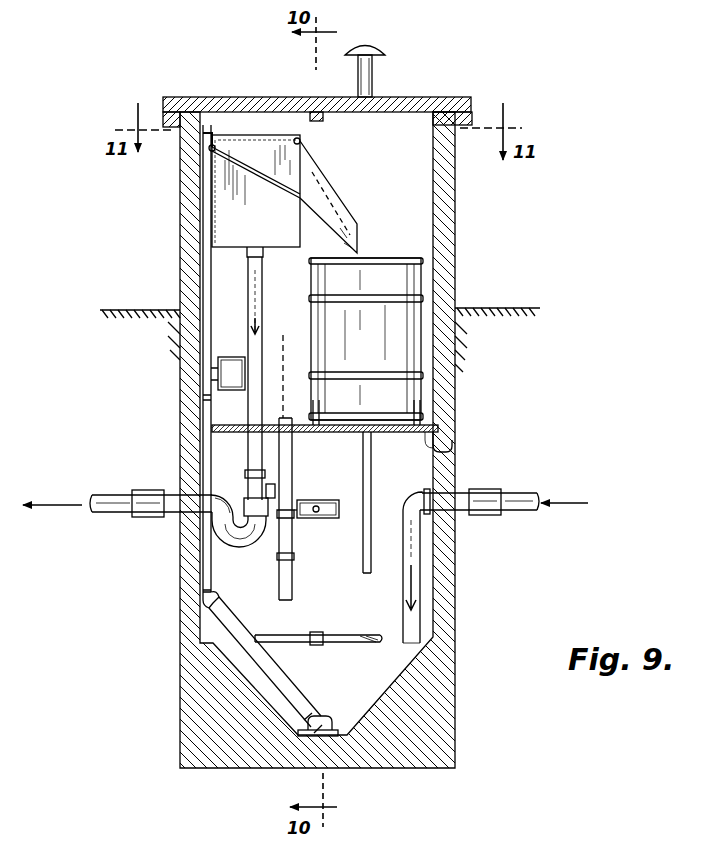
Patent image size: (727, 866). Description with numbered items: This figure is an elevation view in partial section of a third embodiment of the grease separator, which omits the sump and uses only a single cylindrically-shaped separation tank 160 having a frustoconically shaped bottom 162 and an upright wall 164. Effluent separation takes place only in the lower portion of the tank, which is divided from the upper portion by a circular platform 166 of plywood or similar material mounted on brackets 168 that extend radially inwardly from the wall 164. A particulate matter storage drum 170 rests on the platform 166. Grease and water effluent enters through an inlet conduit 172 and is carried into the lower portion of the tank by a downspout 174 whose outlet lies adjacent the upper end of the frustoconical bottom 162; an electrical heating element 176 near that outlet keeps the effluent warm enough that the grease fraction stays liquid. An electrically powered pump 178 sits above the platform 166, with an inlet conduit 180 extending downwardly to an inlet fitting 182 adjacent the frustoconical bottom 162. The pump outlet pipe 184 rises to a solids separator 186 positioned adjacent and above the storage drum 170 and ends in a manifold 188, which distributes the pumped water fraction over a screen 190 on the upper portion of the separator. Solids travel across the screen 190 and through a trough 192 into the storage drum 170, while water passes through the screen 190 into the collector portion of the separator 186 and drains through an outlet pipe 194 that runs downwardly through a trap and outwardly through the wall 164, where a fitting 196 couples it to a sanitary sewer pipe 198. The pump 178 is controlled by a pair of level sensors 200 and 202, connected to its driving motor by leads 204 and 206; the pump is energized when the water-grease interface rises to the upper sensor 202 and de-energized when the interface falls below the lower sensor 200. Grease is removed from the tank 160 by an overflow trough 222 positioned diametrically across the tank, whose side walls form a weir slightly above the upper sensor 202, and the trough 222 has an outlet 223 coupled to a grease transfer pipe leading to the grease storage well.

The separation tank 160 is at (458, 479).
The frustoconically shaped bottom 162 is at (262, 688).
The upright wall 164 is at (200, 432).
The circular platform 166 is at (440, 425).
The brackets 168 is at (448, 447).
The particulate matter storage drum 170 is at (405, 280).
The inlet conduit 172 is at (528, 494).
The downspout 174 is at (415, 592).
The electrical heating element 176 is at (375, 638).
The electrically powered pump 178 is at (216, 375).
The inlet conduit 180 is at (205, 567).
The inlet fitting 182 is at (338, 733).
The outlet pipe 184 is at (203, 297).
The solids separator 186 is at (210, 205).
The manifold 188 is at (214, 147).
The screen 190 is at (256, 168).
The trough 192 is at (340, 191).
The outlet pipe 194 is at (208, 403).
The fitting 196 is at (147, 505).
The sanitary sewer pipe 198 is at (107, 497).
The level sensor 200 is at (292, 557).
The level sensor 202 is at (298, 502).
The lead 204 is at (263, 365).
The lead 206 is at (284, 372).
The overflow trough 222 is at (320, 519).
The outlet 223 is at (319, 511).